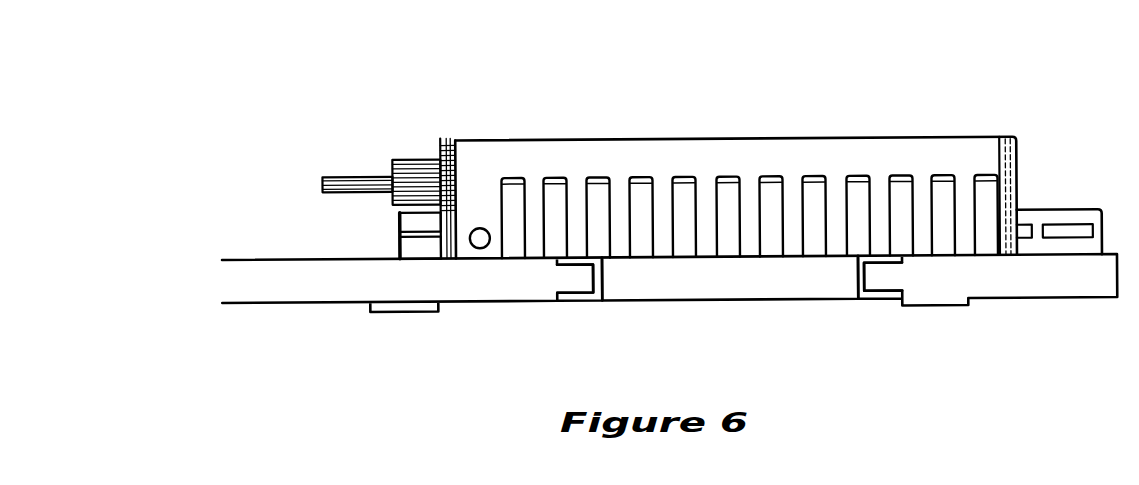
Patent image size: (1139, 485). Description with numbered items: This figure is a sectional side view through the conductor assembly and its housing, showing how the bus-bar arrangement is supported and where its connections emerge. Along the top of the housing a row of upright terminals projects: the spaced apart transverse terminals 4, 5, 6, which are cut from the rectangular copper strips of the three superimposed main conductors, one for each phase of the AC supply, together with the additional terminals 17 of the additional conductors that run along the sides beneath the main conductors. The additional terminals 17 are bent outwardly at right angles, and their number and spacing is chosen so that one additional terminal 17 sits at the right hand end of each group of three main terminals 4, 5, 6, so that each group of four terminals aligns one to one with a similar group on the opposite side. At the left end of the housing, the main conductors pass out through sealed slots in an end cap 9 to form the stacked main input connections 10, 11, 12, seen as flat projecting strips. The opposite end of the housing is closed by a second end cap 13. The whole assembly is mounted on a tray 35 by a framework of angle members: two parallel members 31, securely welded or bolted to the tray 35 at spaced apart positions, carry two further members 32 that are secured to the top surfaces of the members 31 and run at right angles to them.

The transverse terminal 4 is at (556, 180).
The transverse terminal 5 is at (600, 180).
The transverse terminal 6 is at (641, 180).
The additional terminal 17 is at (515, 180).
The end cap 9 is at (457, 141).
The main input connection 10 is at (403, 160).
The main input connection 11 is at (347, 178).
The main input connection 12 is at (394, 205).
The end cap 13 is at (1018, 153).
The parallel angle member 31 is at (602, 285).
The further angle member 32 is at (1066, 215).
The tray 35 is at (312, 289).